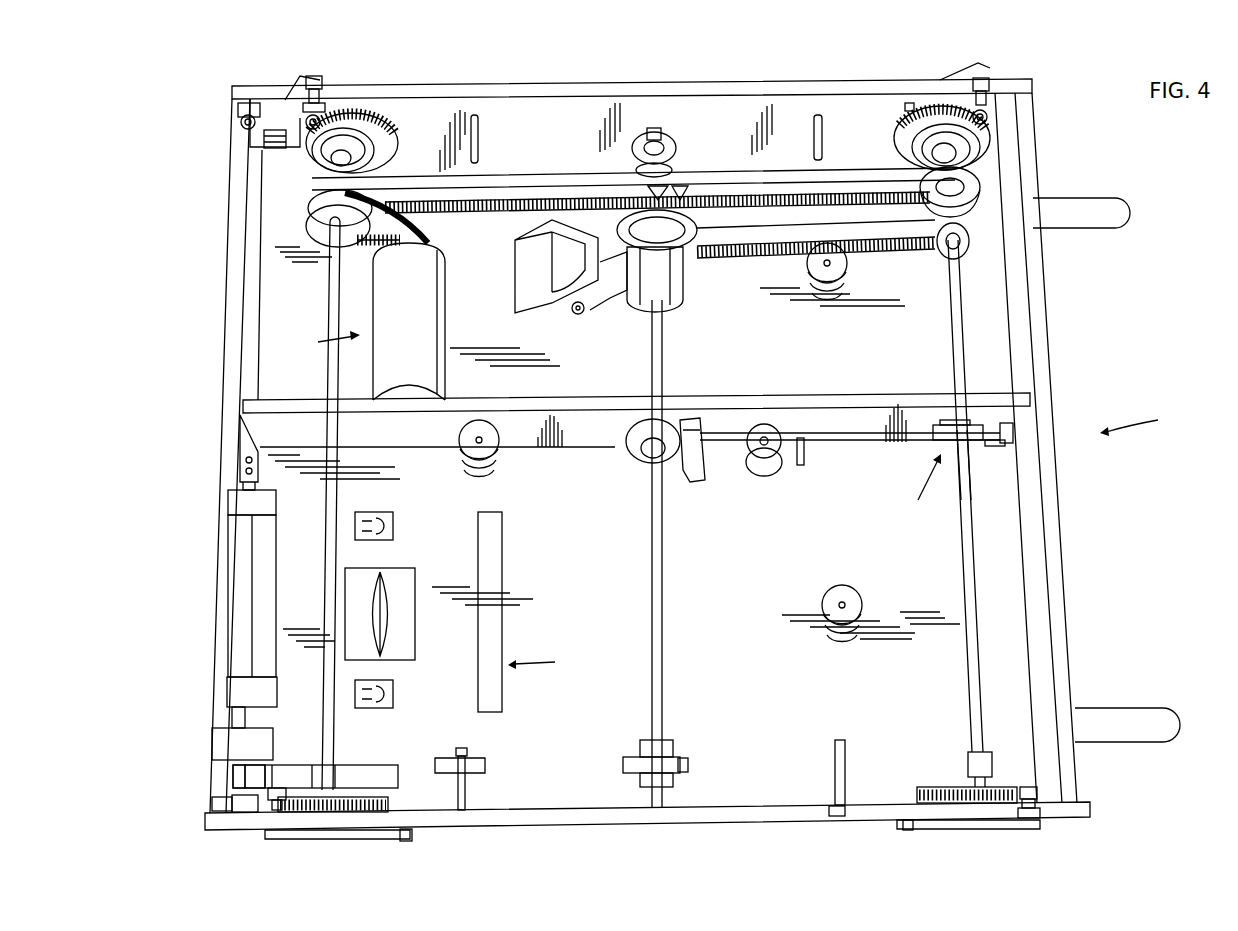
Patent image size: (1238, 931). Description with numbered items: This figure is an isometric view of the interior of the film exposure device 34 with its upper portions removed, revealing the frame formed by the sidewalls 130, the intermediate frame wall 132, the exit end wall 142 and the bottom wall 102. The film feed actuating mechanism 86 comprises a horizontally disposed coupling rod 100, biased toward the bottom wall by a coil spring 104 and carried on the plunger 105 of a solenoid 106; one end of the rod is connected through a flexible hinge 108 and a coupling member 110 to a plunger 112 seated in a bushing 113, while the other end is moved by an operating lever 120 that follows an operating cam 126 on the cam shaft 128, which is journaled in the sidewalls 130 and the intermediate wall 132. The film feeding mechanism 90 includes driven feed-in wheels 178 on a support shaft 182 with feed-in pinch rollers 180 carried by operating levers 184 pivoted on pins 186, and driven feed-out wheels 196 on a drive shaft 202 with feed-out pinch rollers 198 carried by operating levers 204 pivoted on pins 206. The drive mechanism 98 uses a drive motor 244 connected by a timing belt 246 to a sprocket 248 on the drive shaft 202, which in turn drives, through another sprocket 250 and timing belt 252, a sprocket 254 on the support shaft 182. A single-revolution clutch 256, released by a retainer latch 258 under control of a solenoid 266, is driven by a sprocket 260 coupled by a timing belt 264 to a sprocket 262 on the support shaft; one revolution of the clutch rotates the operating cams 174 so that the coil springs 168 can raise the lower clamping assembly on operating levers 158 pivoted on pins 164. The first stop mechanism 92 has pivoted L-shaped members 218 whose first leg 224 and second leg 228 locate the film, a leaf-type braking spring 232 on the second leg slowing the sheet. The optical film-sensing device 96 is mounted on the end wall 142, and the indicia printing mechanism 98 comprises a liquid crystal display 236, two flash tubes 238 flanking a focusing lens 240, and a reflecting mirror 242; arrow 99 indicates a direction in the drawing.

The film exposure device 34 is at (1149, 421).
The film feed actuating mechanism 86 is at (916, 488).
The film feeding mechanism 90 is at (748, 72).
The first stop mechanism 92 is at (287, 100).
The film-sensing device 96 is at (240, 462).
The printing mechanism 98 is at (547, 660).
The direction 99 is at (318, 342).
The coupling rod 100 is at (855, 441).
The bottom wall 102 is at (1012, 552).
The coil spring 104 is at (802, 466).
The plunger 105 is at (766, 437).
The solenoid 106 is at (762, 476).
The flexible hinge 108 is at (938, 425).
The coupling member 110 is at (970, 470).
The plunger 112 is at (995, 446).
The bushing 113 is at (1012, 428).
The operating lever 120 is at (700, 485).
The operating cam 126 is at (632, 455).
The cam shaft 128 is at (664, 612).
The frame sidewalls 130 is at (870, 92).
The intermediate frame wall 132 is at (855, 396).
The end wall 142 is at (243, 340).
The operating levers 158 is at (480, 768).
The pivot shafts or pins 164 is at (478, 130).
The coil springs 168 is at (826, 300).
The operating cams 174 is at (668, 165).
The feed-in wheels 178 is at (945, 108).
The feed-in pinch rollers 180 is at (988, 104).
The support shaft 182 is at (968, 330).
The operating levers 184 is at (960, 830).
The pins 186 is at (905, 831).
The feed-out wheels 196 is at (365, 112).
The feed-out pinch rollers 198 is at (322, 112).
The drive shaft 202 is at (327, 372).
The operating levers 204 is at (362, 840).
The pins 206 is at (408, 840).
The L-shaped members 218 is at (232, 778).
The leg 224 is at (372, 780).
The second leg 228 is at (264, 143).
The braking spring 232 is at (283, 132).
The liquid crystal display 236 is at (502, 700).
The flash tubes 238 is at (393, 526).
The focusing lens 240 is at (390, 630).
The reflecting mirror 242 is at (258, 552).
The drive motor 244 is at (382, 296).
The timing belt 246 is at (312, 205).
The sprocket 248 is at (310, 232).
The sprocket 250 is at (423, 217).
The timing belt 252 is at (510, 182).
The sprocket 254 is at (977, 188).
The single-revolution clutch 256 is at (680, 280).
The retainer latch 258 is at (608, 300).
The sprocket 260 is at (687, 247).
The sprocket 262 is at (965, 210).
The timing belt 264 is at (845, 203).
The solenoid 266 is at (520, 270).